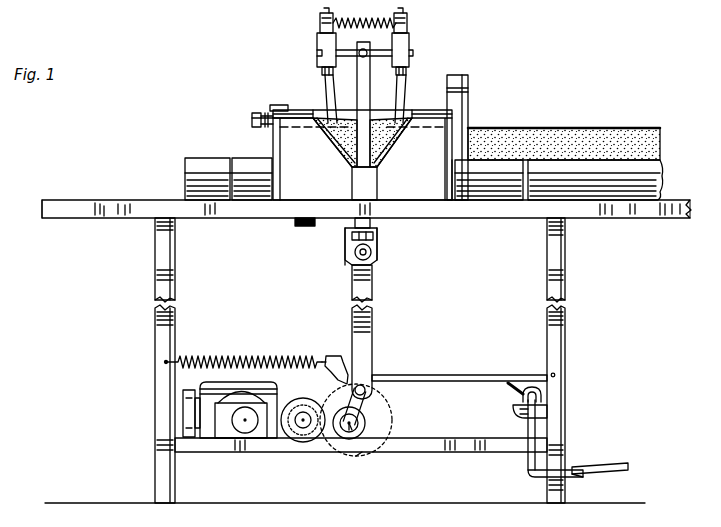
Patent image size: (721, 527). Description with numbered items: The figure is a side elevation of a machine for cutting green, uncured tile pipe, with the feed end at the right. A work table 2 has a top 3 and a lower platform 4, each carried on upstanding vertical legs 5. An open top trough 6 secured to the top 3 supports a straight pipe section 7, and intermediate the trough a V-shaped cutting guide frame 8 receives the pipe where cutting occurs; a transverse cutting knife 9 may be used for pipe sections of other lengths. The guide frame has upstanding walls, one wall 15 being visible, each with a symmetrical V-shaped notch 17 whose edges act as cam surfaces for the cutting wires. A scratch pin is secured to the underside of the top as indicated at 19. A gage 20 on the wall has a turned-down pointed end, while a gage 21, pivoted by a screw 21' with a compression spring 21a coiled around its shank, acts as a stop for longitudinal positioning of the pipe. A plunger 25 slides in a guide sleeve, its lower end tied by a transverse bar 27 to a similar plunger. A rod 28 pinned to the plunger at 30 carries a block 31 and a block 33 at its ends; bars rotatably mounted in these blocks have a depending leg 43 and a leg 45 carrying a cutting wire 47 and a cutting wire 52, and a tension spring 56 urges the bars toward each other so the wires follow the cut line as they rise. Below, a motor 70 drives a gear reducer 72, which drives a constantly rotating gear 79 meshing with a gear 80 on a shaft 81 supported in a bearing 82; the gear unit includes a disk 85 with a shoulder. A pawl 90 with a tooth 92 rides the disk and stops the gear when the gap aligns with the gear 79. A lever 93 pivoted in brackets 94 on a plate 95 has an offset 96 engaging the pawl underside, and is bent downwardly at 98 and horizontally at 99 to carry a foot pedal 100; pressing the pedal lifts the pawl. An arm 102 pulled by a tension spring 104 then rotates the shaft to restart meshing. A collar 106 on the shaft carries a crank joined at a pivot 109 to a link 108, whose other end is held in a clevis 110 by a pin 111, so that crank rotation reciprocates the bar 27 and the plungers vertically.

The work table 2 is at (690, 207).
The top 3 is at (642, 219).
The lower platform 4 is at (440, 455).
The vertical legs 5 is at (155, 337).
The open top trough 6 is at (663, 177).
The pipe section 7 is at (549, 128).
The cutting guide frame 8 is at (432, 192).
The transverse cutting knife 9 is at (470, 93).
The wall 15 is at (362, 155).
The V-shaped notch 17 is at (392, 144).
The scratch pin securement 19 is at (295, 223).
The gage 20 is at (278, 105).
The gage 21 is at (242, 126).
The compression spring 21a is at (264, 118).
The screw 21' is at (212, 119).
The plunger 25 is at (357, 92).
The transverse bar 27 is at (344, 244).
The rod 28 is at (405, 53).
The pin 30 is at (326, 85).
The block 31 is at (409, 30).
The block 33 is at (317, 53).
The leg 43 is at (403, 98).
The leg 45 is at (312, 122).
The cutting wire 47 is at (400, 123).
The cutting wire 52 is at (329, 143).
The tension spring 56 is at (320, 29).
The motor 70 is at (200, 384).
The gear reducer 72 is at (232, 436).
The gear 79 is at (298, 440).
The gear 80 is at (384, 430).
The shaft 81 is at (348, 425).
The bearing 82 is at (364, 453).
The disk 85 is at (392, 417).
The pawl 90 is at (472, 374).
The tooth 92 is at (338, 355).
The lever 93 is at (540, 431).
The brackets 94 is at (542, 393).
The plate 95 is at (547, 411).
The offset 96 is at (507, 384).
The downwardly bent portion 98 is at (528, 471).
The horizontal portion 99 is at (584, 478).
The foot pedal 100 is at (628, 465).
The arm 102 is at (311, 408).
The tension spring 104 is at (195, 355).
The collar 106 is at (350, 426).
The link 108 is at (372, 312).
The pivot 109 is at (363, 380).
The clevis 110 is at (371, 253).
The pin 111 is at (346, 258).